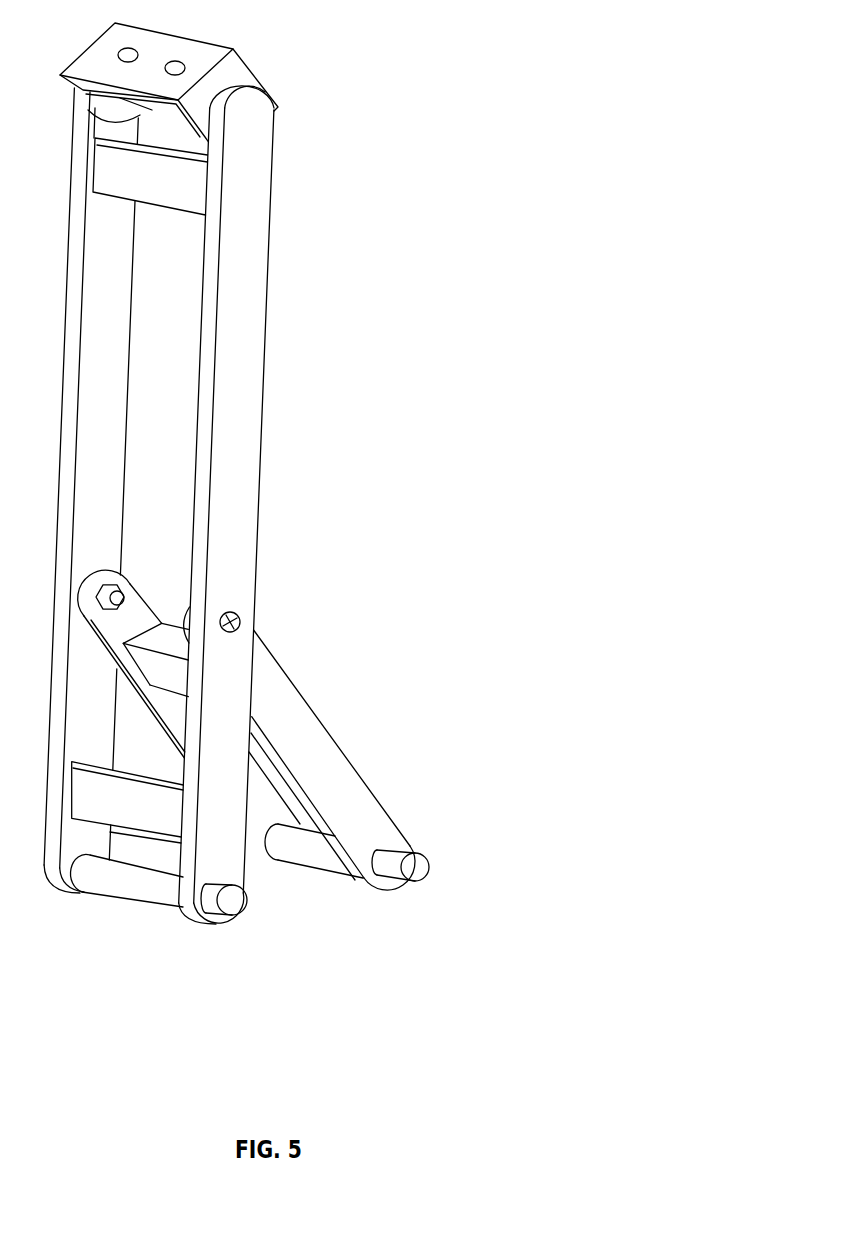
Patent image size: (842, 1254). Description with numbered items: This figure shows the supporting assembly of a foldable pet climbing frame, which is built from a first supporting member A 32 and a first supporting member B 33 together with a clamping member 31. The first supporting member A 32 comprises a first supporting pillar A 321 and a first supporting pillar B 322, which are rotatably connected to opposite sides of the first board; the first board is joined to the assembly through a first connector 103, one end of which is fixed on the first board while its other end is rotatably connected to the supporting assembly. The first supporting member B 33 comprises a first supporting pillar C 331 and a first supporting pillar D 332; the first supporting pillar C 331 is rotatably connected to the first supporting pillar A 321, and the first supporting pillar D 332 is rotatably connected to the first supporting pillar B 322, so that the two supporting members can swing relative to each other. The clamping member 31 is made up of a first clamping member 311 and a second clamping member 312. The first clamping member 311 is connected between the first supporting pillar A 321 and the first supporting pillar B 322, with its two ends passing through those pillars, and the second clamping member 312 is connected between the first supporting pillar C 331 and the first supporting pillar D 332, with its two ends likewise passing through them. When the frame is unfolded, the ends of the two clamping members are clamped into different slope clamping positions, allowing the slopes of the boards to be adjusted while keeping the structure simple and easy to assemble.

The first connector 103 is at (197, 59).
The first supporting member A 32 is at (276, 505).
The first supporting pillar A 321 is at (110, 312).
The first supporting pillar B 322 is at (237, 425).
The first supporting member B 33 is at (312, 718).
The first supporting pillar C 331 is at (125, 626).
The first supporting pillar D 332 is at (317, 743).
The clamping member 31 is at (315, 958).
The first clamping member 311 is at (233, 897).
The second clamping member 312 is at (415, 868).